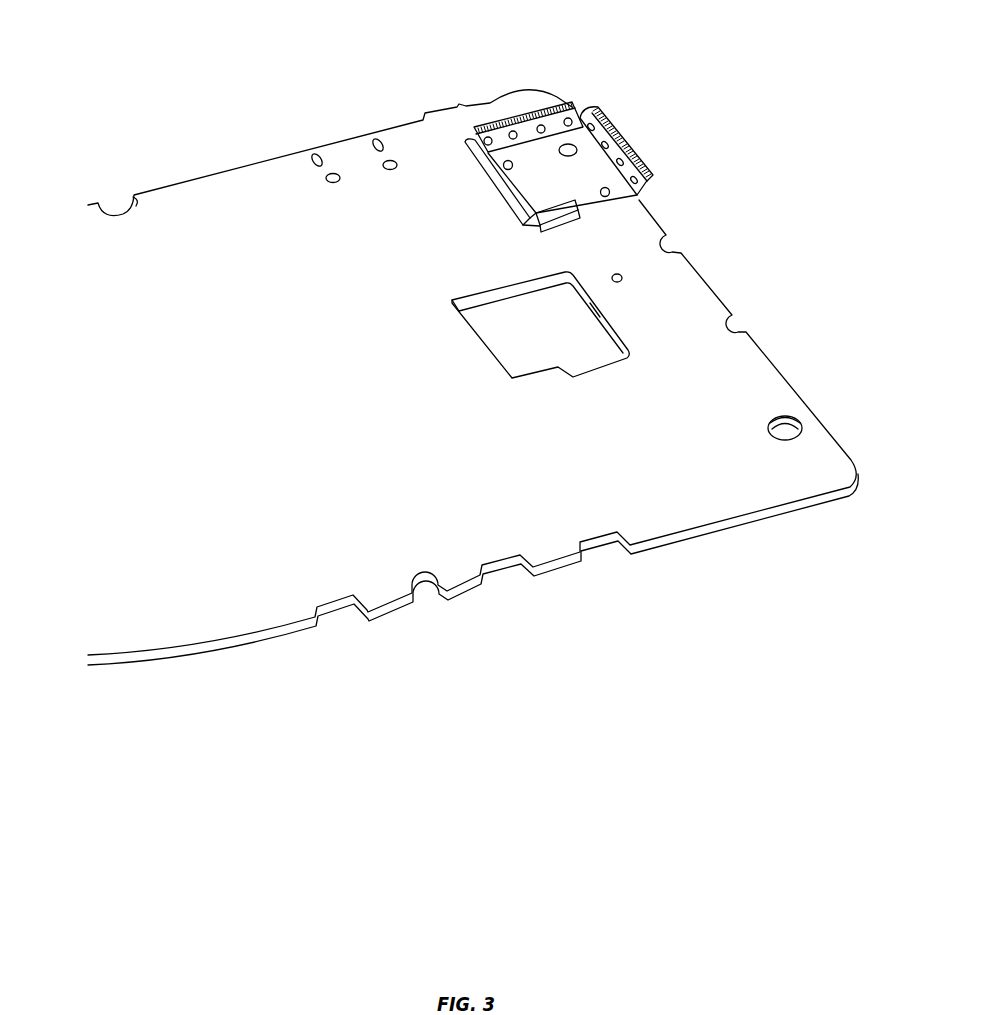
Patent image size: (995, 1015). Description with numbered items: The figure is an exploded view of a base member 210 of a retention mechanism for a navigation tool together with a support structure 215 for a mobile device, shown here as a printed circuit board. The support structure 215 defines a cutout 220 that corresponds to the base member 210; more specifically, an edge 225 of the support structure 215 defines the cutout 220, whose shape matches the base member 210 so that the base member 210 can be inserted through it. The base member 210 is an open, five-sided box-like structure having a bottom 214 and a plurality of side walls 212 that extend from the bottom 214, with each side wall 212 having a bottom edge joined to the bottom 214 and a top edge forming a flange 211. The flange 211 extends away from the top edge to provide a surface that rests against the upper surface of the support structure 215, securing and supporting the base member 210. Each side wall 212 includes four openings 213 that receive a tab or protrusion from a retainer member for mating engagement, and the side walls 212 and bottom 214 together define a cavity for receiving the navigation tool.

The base member 210 is at (598, 139).
The flange 211 is at (519, 118).
The side wall 212 is at (562, 224).
The opening 213 is at (581, 106).
The bottom 214 is at (592, 176).
The support structure 215 is at (742, 400).
The cutout 220 is at (593, 352).
The edge 225 is at (602, 307).